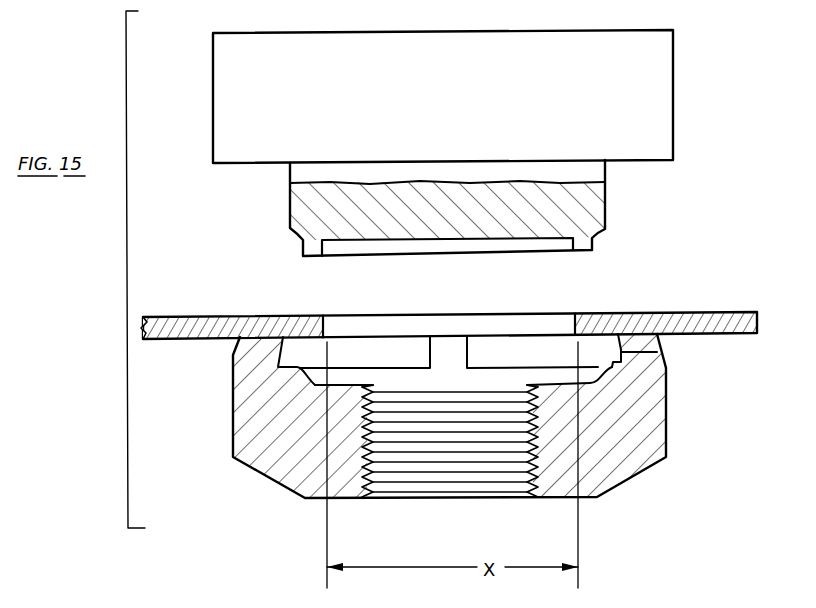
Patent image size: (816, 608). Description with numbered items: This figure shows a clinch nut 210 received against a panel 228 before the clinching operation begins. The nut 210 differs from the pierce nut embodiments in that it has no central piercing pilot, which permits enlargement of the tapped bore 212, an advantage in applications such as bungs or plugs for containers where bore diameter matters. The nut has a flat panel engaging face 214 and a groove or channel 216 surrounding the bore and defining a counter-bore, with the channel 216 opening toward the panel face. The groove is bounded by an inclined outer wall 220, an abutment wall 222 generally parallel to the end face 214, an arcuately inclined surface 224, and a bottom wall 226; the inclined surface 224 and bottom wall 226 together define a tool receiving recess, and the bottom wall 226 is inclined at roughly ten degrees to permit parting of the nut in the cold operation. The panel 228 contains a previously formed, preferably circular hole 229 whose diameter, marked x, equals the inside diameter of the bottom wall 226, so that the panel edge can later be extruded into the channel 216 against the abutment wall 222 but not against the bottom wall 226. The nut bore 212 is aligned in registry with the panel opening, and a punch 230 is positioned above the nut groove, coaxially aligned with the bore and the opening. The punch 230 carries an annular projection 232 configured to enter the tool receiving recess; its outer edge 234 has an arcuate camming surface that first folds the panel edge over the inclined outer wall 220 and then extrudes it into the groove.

The nut 210 is at (606, 478).
The tapped bore 212 is at (405, 489).
The panel engaging face 214 is at (266, 336).
The groove or channel 216 is at (297, 347).
The inclined outer wall 220 is at (618, 345).
The abutment wall 222 is at (665, 352).
The arcuately inclined surface 224 is at (306, 374).
The bottom wall 226 is at (596, 382).
The panel 228 is at (174, 316).
The hole 229 is at (347, 316).
The punch 230 is at (664, 70).
The annular projection 232 is at (581, 253).
The outer edge 234 is at (597, 235).